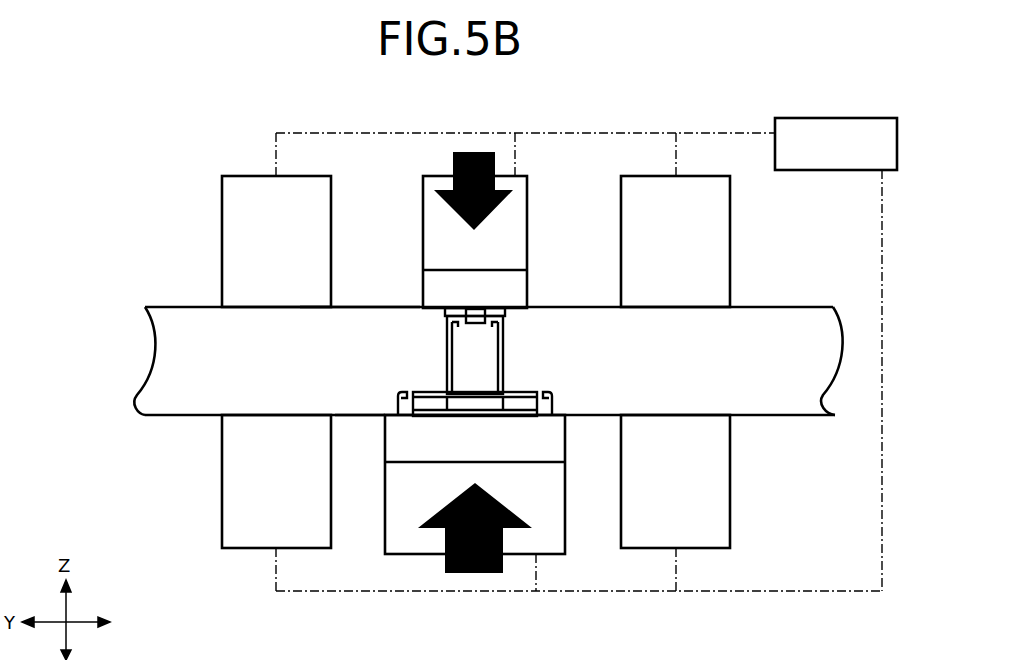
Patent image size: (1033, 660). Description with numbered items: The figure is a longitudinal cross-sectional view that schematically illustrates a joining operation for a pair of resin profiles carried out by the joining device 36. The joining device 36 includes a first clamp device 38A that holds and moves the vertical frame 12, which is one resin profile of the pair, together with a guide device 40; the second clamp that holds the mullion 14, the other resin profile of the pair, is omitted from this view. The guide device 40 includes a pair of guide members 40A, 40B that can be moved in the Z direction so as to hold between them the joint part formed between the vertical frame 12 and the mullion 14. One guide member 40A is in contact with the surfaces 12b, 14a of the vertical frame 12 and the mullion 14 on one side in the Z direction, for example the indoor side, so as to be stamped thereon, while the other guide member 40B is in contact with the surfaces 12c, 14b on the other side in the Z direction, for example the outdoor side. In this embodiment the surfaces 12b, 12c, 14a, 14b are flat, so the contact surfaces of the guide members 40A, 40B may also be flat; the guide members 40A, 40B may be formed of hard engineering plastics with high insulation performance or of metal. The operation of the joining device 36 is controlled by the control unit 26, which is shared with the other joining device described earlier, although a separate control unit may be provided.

The vertical frame 12 is at (488, 363).
The surface of the vertical frame 12b is at (383, 305).
The surface of the vertical frame 12c is at (355, 419).
The mullion 14 is at (508, 377).
The surface of the mullion 14a is at (478, 308).
The surface of the mullion 14b is at (515, 418).
The control unit 26 is at (862, 117).
The joining device 36 is at (139, 154).
The first clamp device 38A is at (240, 184).
The guide device 40 is at (486, 367).
The guide member 40A is at (513, 232).
The guide member 40B is at (412, 543).